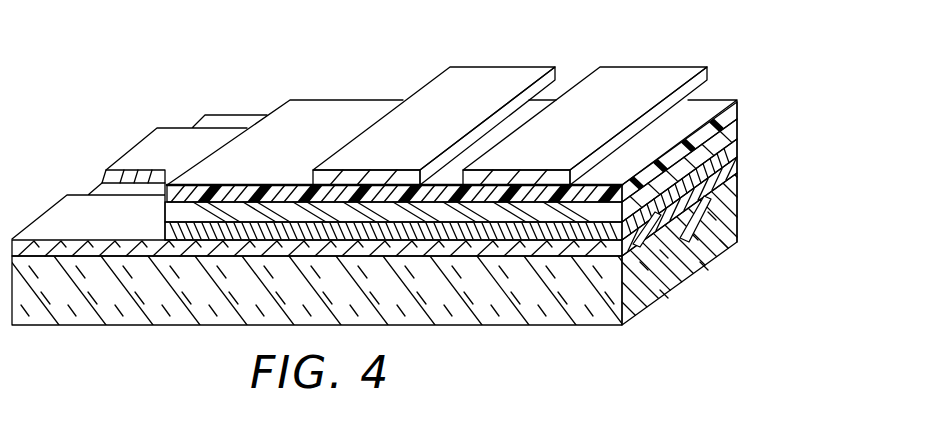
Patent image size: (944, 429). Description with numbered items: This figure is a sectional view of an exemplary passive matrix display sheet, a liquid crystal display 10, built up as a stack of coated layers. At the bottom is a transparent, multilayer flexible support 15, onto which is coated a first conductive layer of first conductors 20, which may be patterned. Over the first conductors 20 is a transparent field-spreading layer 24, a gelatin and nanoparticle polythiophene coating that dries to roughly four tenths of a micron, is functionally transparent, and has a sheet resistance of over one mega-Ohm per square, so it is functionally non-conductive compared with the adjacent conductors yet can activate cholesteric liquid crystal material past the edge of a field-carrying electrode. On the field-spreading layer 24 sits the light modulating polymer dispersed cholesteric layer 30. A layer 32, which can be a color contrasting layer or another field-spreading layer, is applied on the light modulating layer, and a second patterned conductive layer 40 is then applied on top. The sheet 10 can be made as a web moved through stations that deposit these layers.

The liquid crystal display 10 is at (141, 92).
The transparent, multilayer flexible support 15 is at (656, 300).
The first conductors 20 is at (655, 213).
The transparent field-spreading layer 24 is at (737, 157).
The polymer dispersed cholesteric layer 30 is at (728, 135).
The color contrasting layer 32 is at (733, 110).
The second patterned conductive layer 40 is at (510, 77).